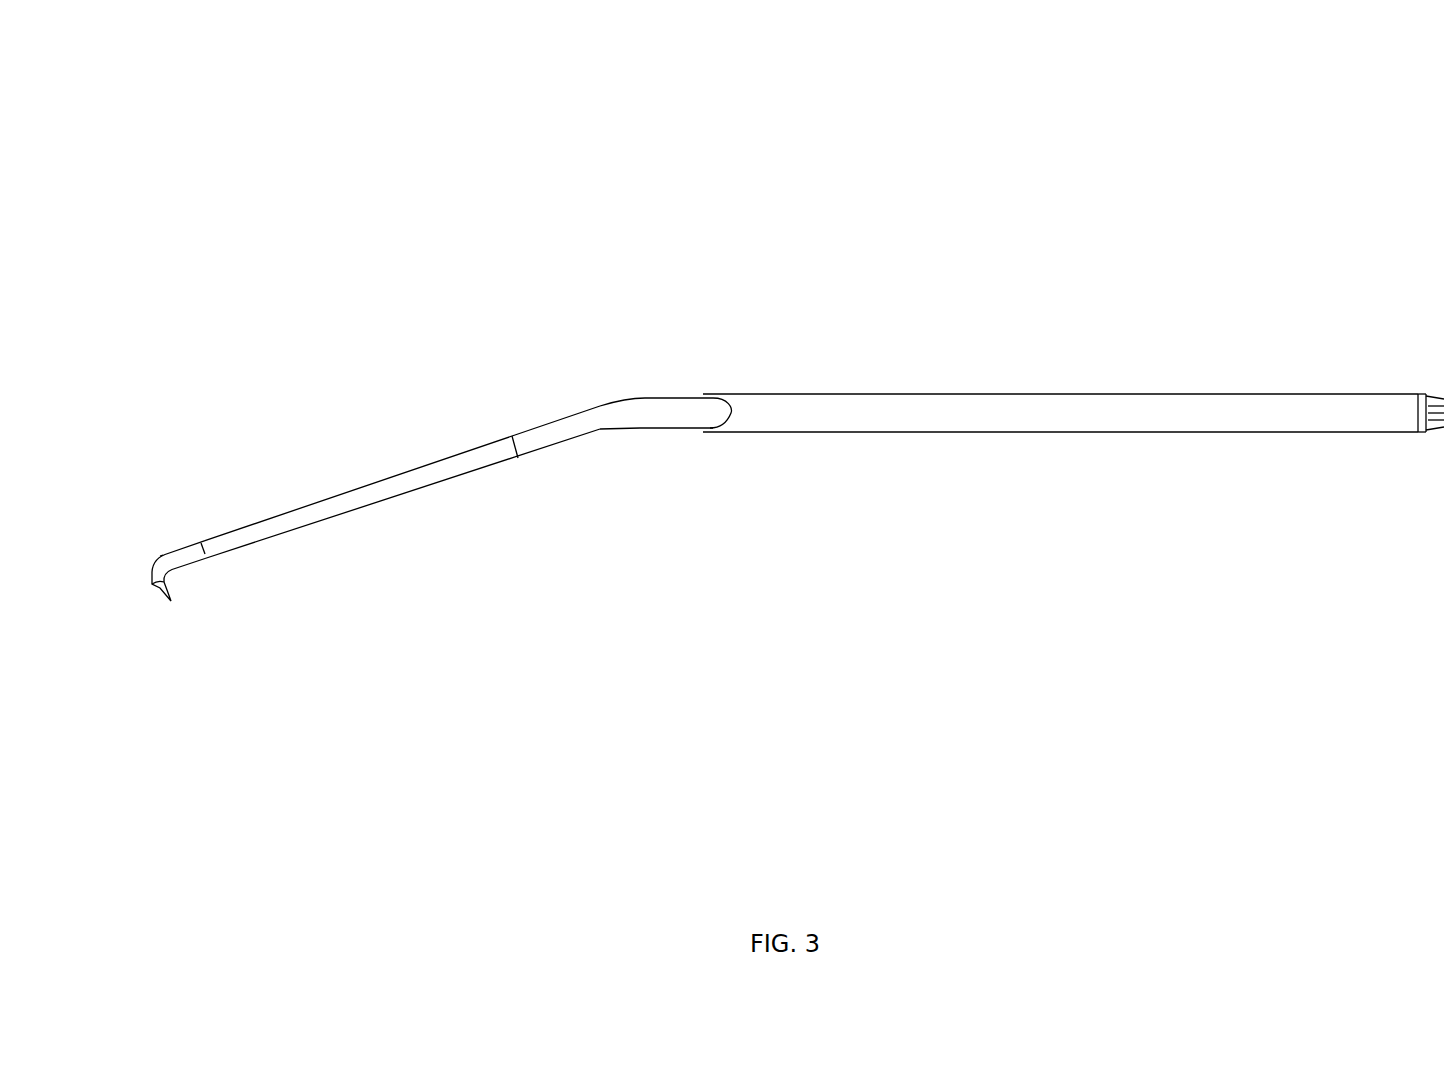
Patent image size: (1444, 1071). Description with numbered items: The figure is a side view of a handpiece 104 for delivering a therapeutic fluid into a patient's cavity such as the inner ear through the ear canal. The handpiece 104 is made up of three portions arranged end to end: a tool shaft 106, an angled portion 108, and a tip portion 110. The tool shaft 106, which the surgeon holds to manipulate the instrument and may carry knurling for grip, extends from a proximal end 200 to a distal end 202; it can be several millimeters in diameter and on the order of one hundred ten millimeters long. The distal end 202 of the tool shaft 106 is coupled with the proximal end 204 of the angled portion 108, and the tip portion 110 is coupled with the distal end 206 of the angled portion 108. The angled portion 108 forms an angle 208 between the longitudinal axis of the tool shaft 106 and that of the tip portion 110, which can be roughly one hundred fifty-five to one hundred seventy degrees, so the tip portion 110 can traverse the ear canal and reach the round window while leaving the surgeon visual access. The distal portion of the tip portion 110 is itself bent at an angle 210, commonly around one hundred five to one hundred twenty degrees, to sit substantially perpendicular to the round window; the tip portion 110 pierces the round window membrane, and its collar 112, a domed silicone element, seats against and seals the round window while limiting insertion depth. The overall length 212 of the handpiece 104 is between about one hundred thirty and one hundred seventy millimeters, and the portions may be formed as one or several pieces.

The handpiece 104 is at (272, 126).
The tool shaft 106 is at (1438, 258).
The angled portion 108 is at (487, 345).
The tip portion 110 is at (512, 422).
The collar 112 is at (157, 590).
The proximal end 200 is at (1400, 413).
The distal end 202 is at (733, 416).
The proximal end 204 is at (677, 413).
The distal end 206 is at (543, 426).
The angle 208 is at (705, 448).
The angle 210 is at (180, 592).
The overall length 212 is at (1438, 617).